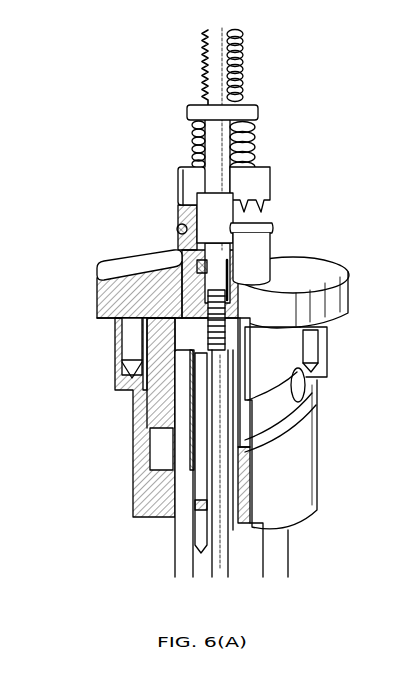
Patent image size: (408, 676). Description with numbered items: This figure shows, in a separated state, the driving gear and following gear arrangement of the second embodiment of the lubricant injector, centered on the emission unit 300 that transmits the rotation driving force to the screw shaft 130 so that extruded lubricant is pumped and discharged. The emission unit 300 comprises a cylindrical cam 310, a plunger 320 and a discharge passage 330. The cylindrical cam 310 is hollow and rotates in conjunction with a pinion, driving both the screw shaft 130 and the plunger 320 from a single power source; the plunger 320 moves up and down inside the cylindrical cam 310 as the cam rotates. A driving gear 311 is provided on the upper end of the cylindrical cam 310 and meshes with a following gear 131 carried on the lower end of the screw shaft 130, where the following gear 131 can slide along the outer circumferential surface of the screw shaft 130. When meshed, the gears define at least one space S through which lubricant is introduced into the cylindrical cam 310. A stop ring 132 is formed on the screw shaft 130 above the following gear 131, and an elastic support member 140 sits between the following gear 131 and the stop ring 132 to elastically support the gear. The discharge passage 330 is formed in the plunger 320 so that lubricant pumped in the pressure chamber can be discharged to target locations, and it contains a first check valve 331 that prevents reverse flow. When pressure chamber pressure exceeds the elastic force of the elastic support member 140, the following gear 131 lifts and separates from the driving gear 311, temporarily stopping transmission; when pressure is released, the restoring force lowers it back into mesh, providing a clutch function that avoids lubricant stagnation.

The screw shaft 130 is at (242, 48).
The stop ring 132 is at (188, 118).
The elastic support member 140 is at (192, 153).
The following gear 131 is at (268, 182).
The driving gear 311 is at (262, 250).
The space S is at (178, 225).
The emission unit 300 is at (88, 553).
The cylindrical cam 310 is at (125, 398).
The first check valve 331 is at (185, 292).
The plunger 320 is at (217, 397).
The discharge passage 330 is at (195, 462).